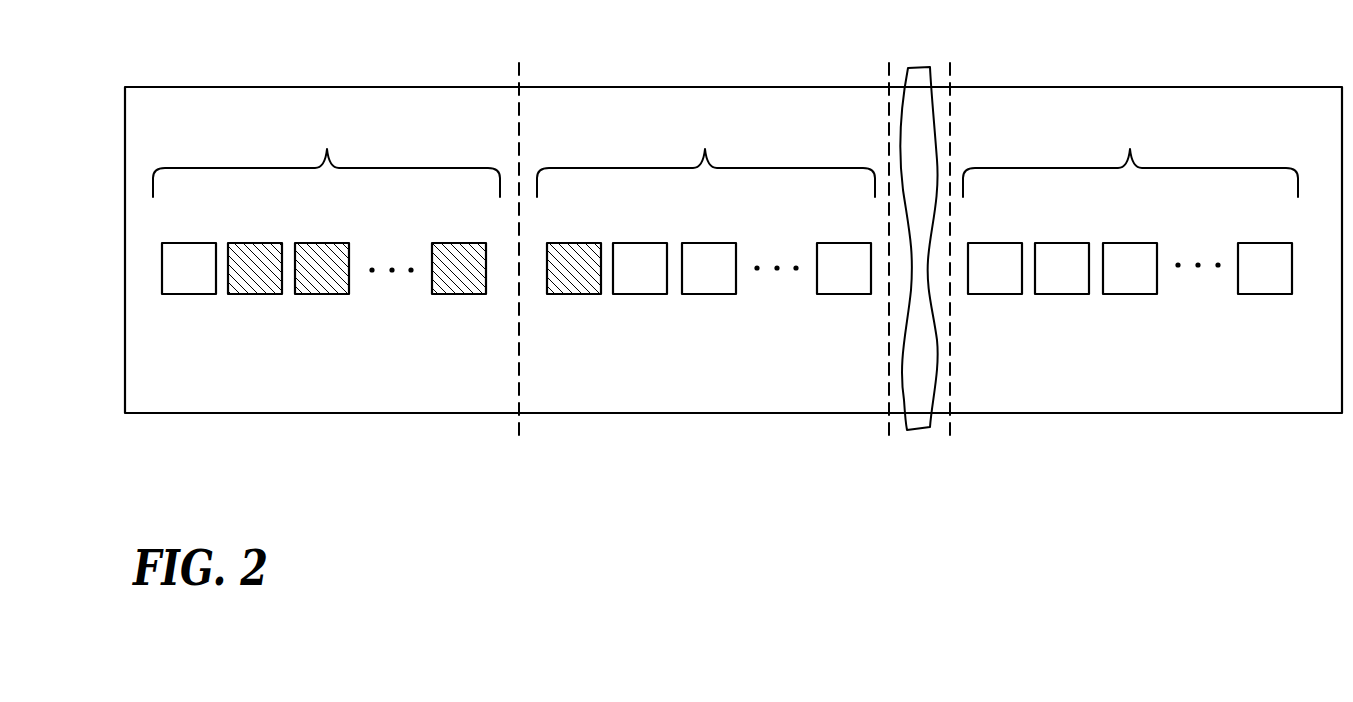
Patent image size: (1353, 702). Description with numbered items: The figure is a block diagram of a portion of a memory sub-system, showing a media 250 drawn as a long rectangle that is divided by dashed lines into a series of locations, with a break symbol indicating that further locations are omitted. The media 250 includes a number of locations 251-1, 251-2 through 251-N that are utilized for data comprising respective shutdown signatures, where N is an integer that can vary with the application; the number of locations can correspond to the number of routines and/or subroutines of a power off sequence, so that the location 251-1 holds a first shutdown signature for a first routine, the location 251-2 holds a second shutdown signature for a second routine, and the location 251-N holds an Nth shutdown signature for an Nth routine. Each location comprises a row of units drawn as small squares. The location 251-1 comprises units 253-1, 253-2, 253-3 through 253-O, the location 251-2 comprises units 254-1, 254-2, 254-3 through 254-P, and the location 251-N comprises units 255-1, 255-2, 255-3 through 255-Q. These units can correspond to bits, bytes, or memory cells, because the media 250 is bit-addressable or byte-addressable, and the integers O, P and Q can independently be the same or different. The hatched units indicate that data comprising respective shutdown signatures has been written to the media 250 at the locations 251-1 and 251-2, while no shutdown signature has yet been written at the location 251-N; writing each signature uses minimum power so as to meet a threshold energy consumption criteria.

The media 250 is at (204, 92).
The location 251-1 is at (326, 157).
The location 251-2 is at (706, 157).
The location 251-N is at (1130, 157).
The unit 253-1 is at (190, 287).
The unit 253-2 is at (258, 255).
The unit 253-3 is at (323, 285).
The unit 253-O is at (458, 258).
The unit 254-1 is at (573, 283).
The unit 254-2 is at (640, 253).
The unit 254-3 is at (708, 283).
The unit 254-P is at (840, 253).
The unit 255-1 is at (997, 280).
The unit 255-2 is at (1063, 252).
The unit 255-3 is at (1130, 278).
The unit 255-Q is at (1263, 252).